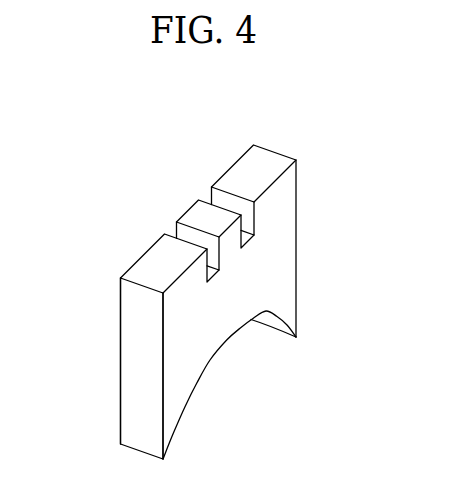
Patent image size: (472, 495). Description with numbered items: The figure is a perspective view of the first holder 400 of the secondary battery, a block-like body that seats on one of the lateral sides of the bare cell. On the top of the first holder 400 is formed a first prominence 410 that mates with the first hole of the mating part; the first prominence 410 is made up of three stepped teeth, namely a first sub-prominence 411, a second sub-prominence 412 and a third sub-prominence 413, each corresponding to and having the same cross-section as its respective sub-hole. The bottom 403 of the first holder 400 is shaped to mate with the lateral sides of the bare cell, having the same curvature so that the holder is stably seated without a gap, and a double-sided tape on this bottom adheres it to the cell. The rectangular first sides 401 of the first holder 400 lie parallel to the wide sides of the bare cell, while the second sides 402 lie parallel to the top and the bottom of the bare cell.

The first holder 400 is at (79, 129).
The first sides 401 is at (297, 246).
The second sides 402 is at (121, 311).
The bottom 403 is at (224, 340).
The first prominence 410 is at (172, 147).
The first sub-prominence 411 is at (233, 171).
The second sub-prominence 412 is at (155, 248).
The third sub-prominence 413 is at (190, 213).